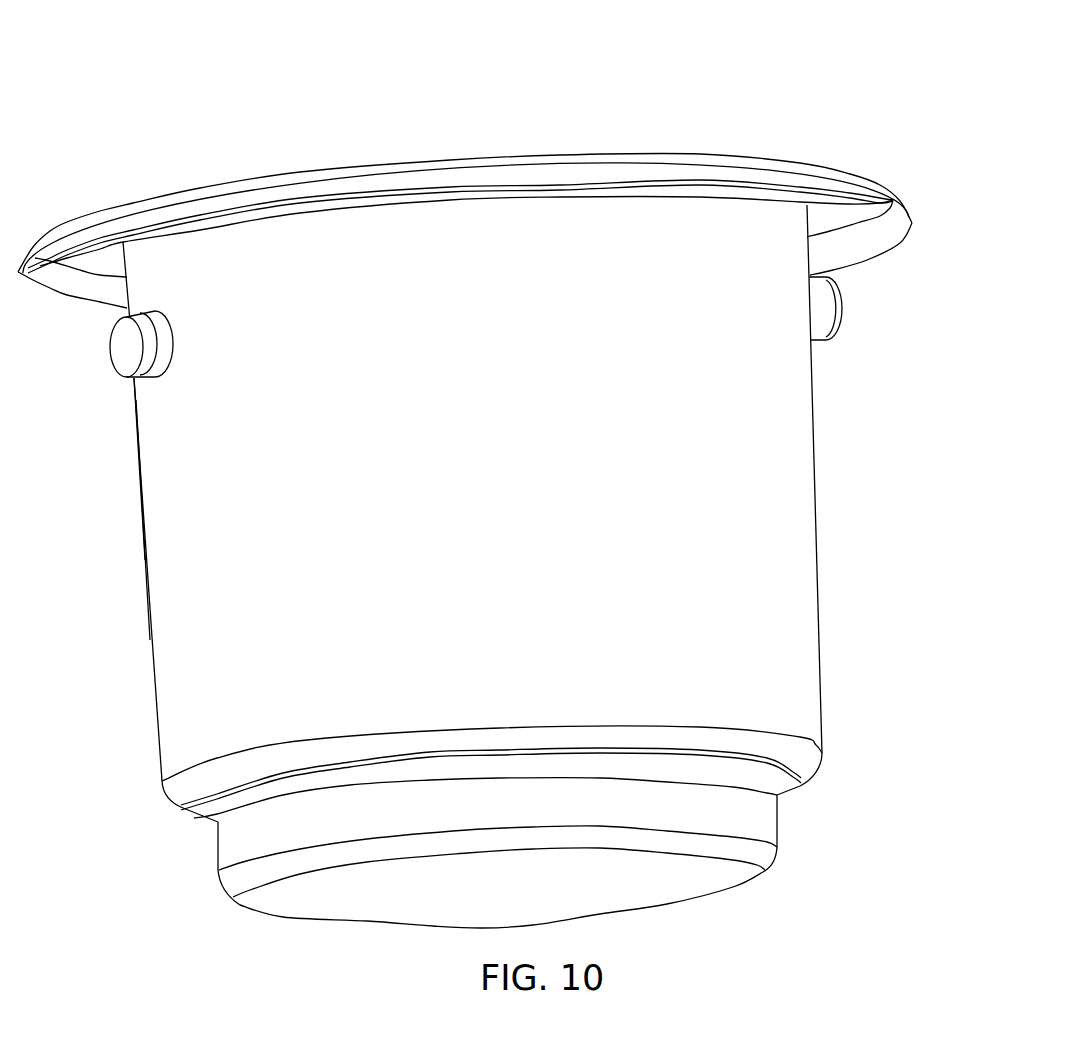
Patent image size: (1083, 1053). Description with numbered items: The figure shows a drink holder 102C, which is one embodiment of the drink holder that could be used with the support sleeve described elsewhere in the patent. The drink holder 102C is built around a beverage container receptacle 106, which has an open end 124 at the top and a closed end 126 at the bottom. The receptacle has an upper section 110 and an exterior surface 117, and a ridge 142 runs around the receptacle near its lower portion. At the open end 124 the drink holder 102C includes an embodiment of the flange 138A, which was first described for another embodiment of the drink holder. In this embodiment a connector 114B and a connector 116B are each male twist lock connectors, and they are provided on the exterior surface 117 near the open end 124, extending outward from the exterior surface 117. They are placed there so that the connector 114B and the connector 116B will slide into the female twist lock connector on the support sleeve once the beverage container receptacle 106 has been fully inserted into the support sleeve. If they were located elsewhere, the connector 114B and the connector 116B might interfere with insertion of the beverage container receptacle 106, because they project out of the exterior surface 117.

The drink holder 102C is at (478, 489).
The open end 124 is at (379, 162).
The flange 138A is at (820, 174).
The connector 114B is at (110, 347).
The connector 116B is at (844, 310).
The upper section 110 is at (138, 469).
The exterior surface 117 is at (145, 545).
The beverage container receptacle 106 is at (150, 626).
The ridge 142 is at (184, 811).
The closed end 126 is at (282, 909).